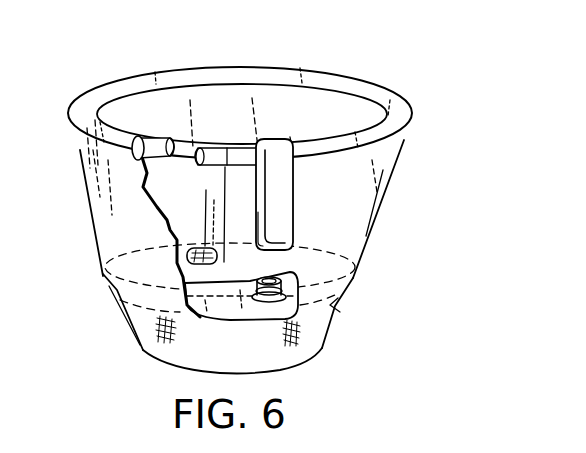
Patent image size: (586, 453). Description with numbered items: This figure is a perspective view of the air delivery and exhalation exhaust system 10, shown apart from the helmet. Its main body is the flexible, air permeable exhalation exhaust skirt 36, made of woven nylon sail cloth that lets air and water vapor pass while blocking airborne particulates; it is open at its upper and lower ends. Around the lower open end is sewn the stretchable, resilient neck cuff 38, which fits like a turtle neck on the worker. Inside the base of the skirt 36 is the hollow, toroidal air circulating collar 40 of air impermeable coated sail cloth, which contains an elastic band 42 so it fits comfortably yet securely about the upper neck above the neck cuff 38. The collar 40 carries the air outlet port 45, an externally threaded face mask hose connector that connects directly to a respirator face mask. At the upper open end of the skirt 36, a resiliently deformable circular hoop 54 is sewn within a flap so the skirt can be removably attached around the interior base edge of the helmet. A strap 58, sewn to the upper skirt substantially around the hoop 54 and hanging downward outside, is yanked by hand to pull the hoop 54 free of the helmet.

The air delivery and exhalation exhaust system 10 is at (322, 56).
The exhalation exhaust skirt 36 is at (375, 174).
The neck cuff 38 is at (330, 321).
The air circulating collar 40 is at (217, 307).
The elastic band 42 is at (200, 248).
The air outlet port 45 is at (263, 297).
The circular hoop 54 is at (153, 146).
The strap 58 is at (281, 222).